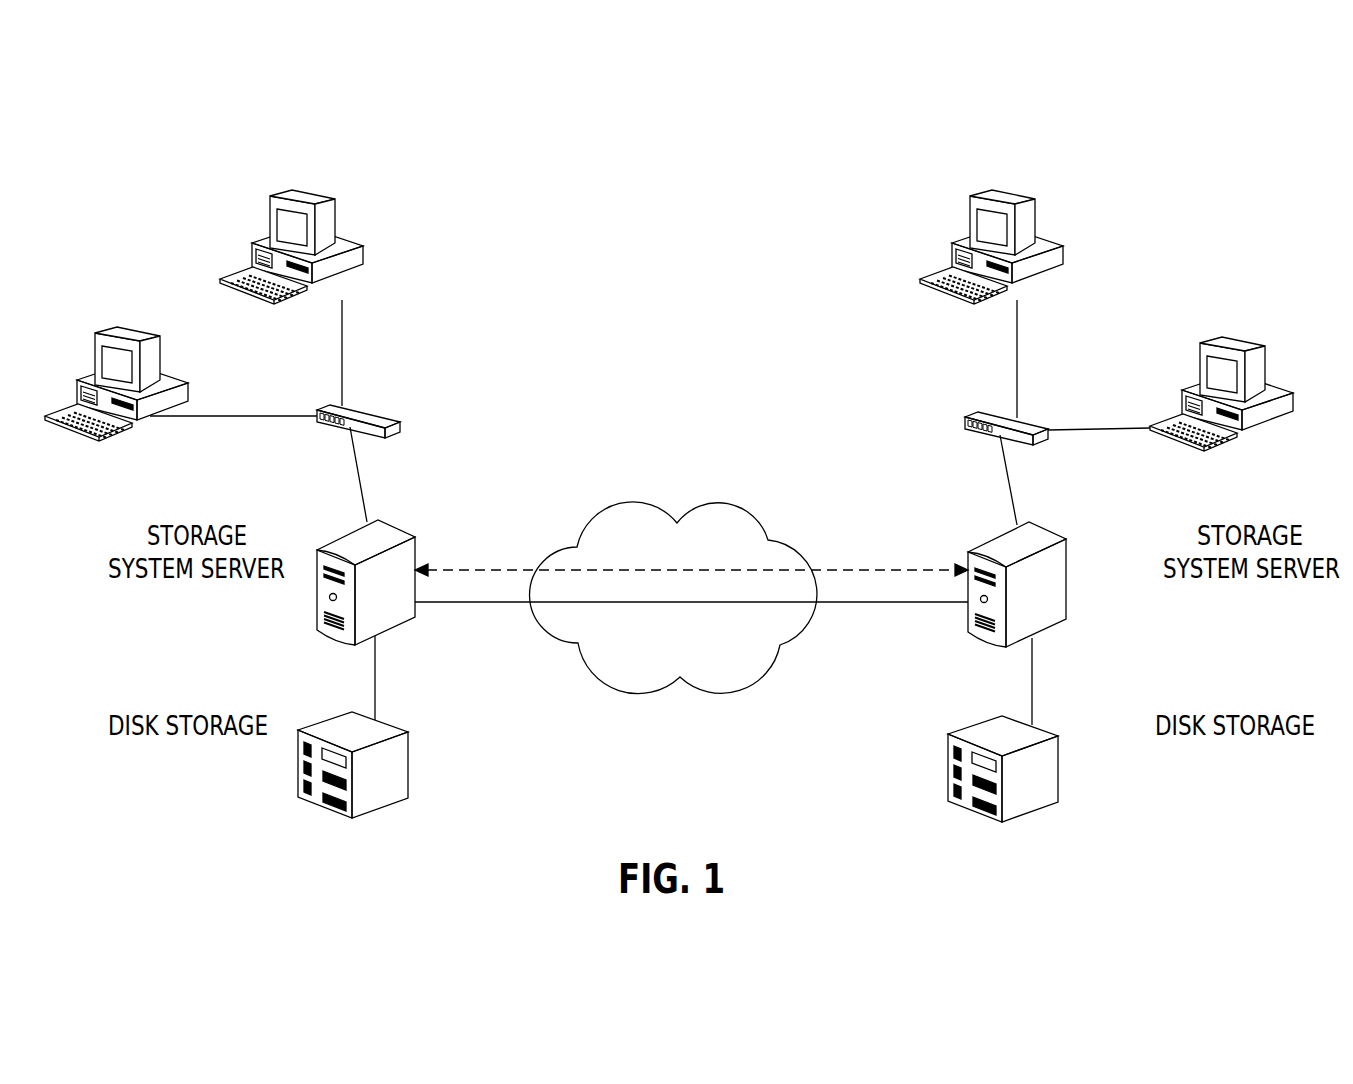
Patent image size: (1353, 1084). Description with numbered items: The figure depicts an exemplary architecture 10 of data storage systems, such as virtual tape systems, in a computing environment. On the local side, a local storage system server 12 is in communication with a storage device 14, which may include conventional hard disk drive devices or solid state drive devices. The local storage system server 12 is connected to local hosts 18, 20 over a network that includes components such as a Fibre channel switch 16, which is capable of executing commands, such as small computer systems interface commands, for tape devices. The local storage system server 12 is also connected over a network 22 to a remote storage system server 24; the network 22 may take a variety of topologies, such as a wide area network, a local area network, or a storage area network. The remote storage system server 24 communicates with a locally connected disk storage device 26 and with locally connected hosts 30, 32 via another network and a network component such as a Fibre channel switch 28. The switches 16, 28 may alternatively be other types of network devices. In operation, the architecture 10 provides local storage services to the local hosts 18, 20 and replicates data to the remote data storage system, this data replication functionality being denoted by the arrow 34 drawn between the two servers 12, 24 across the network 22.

The architecture 10 is at (1223, 167).
The local storage system server 12 is at (392, 524).
The storage device 14 is at (409, 764).
The Fibre channel switch 16 is at (361, 409).
The local host 18 is at (163, 360).
The local host 20 is at (337, 218).
The network 22 is at (763, 518).
The remote storage system server 24 is at (1066, 588).
The disk storage device 26 is at (1059, 773).
The Fibre channel switch 28 is at (988, 410).
The host 30 is at (1037, 218).
The host 32 is at (1268, 370).
The arrow 34 is at (843, 568).